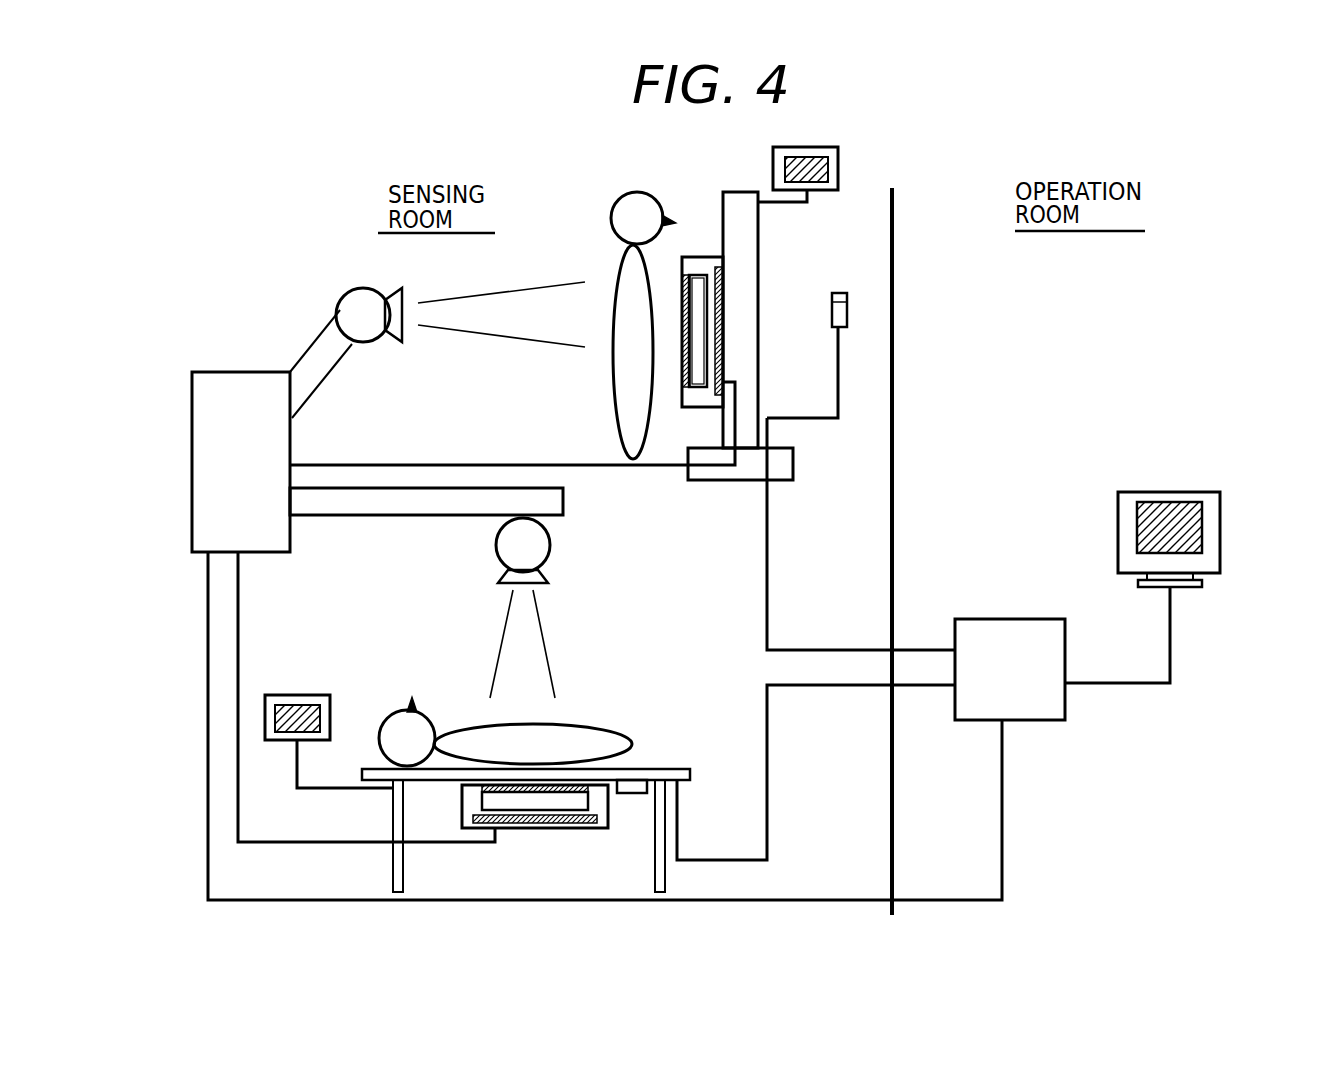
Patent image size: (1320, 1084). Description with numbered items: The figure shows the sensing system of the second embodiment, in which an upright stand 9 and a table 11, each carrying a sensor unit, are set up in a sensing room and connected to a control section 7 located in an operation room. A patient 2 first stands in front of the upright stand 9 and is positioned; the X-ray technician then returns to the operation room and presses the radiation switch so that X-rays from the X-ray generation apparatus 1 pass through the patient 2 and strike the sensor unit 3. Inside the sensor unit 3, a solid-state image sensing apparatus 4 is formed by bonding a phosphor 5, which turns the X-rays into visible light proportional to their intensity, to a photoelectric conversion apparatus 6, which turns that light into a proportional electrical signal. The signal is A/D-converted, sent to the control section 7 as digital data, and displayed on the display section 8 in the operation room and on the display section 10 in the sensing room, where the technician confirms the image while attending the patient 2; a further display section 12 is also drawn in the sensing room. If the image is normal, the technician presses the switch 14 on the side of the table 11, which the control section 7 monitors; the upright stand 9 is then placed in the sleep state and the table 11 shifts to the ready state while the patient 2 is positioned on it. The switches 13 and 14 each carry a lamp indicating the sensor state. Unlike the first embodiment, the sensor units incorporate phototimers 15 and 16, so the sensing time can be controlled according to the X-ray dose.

The X-ray generation apparatus 1 is at (258, 372).
The patient 2 is at (650, 194).
The sensor unit 3 is at (700, 252).
The solid-state image sensing apparatus 4 is at (692, 270).
The phosphor 5 is at (706, 283).
The photoelectric conversion apparatus 6 is at (697, 313).
The control section 7 is at (1022, 618).
The display section 8 is at (1180, 490).
The upright stand 9 is at (750, 363).
The display section 10 is at (825, 170).
The table 11 is at (393, 800).
The display unit 12 is at (298, 705).
The switch 13 is at (840, 291).
The switch 14 is at (633, 794).
The phototimer 15 is at (723, 338).
The phototimer 16 is at (562, 824).